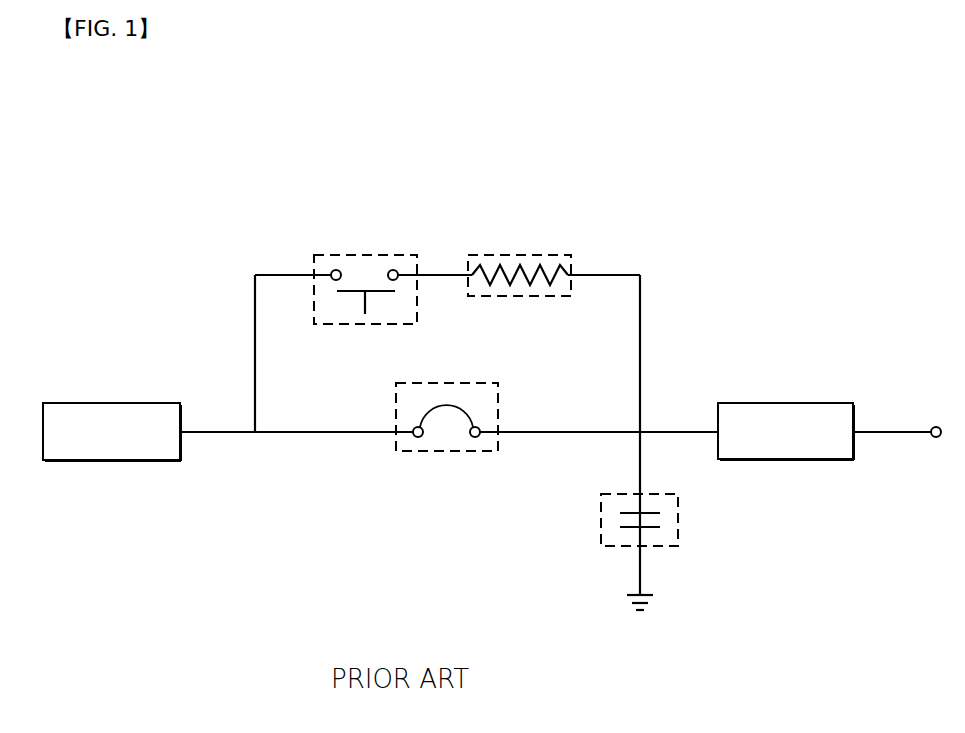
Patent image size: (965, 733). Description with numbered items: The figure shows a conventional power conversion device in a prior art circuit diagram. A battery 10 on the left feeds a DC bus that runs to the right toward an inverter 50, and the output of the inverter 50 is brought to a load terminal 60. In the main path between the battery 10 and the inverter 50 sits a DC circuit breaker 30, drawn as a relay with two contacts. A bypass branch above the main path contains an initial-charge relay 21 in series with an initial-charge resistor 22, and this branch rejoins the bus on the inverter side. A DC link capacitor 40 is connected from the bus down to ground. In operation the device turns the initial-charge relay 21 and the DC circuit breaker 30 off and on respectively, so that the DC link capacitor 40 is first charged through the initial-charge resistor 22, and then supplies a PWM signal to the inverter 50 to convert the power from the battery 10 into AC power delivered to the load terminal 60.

The battery 10 is at (109, 403).
The initial-charge relay 21 is at (365, 255).
The initial-charge resistor 22 is at (520, 255).
The DC circuit breaker 30 is at (445, 451).
The DC link capacitor 40 is at (600, 518).
The inverter 50 is at (785, 403).
The load terminal 60 is at (936, 427).